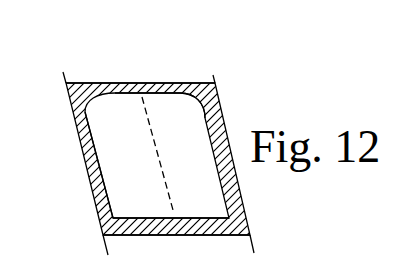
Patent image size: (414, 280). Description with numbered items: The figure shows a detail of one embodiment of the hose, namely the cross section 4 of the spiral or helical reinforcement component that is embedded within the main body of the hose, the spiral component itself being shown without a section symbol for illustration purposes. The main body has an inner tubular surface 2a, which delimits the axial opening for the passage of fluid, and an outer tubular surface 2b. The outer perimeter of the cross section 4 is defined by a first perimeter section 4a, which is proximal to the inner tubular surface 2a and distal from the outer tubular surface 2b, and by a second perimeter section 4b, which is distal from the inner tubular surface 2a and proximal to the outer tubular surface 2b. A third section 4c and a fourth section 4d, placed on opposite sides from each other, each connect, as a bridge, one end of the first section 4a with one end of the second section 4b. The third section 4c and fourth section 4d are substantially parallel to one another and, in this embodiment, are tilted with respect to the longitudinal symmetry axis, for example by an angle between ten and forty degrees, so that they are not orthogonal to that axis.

The inner tubular surface 2a is at (227, 234).
The outer tubular surface 2b is at (98, 91).
The cross section 4 is at (208, 193).
The first perimeter section 4a is at (146, 211).
The second perimeter section 4b is at (181, 104).
The third section 4c is at (97, 151).
The fourth section 4d is at (191, 139).